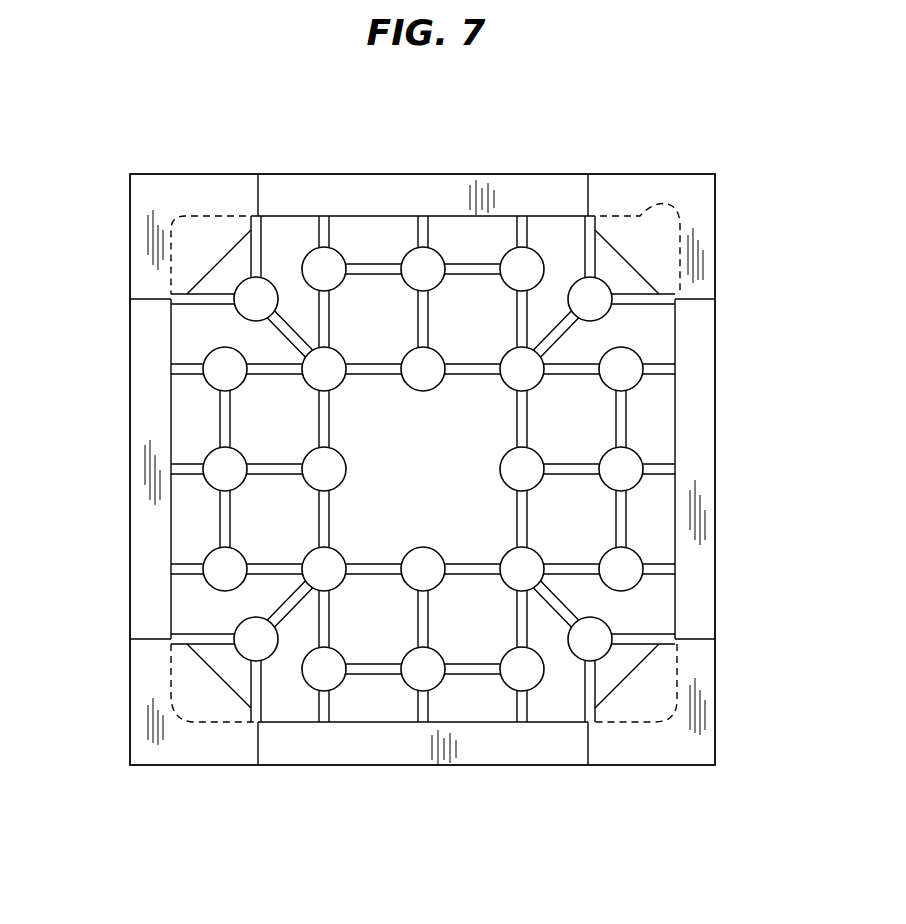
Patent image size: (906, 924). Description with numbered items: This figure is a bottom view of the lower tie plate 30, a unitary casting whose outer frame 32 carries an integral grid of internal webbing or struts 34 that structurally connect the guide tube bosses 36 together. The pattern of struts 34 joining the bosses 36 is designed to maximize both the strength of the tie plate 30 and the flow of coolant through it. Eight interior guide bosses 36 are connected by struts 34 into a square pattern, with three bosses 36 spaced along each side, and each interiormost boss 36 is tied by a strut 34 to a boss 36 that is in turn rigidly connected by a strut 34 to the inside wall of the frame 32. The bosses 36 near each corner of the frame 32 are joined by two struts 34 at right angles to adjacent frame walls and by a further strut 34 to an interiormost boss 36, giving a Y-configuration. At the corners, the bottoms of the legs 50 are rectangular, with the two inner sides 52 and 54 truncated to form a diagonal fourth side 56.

The lower tie plate 30 is at (137, 470).
The outer frame 32 is at (700, 458).
The struts 34 is at (584, 262).
The guide tube bosses 36 is at (238, 314).
The legs 50 is at (137, 207).
The inner side 52 is at (152, 300).
The inner side 54 is at (262, 185).
The diagonal fourth side 56 is at (650, 682).